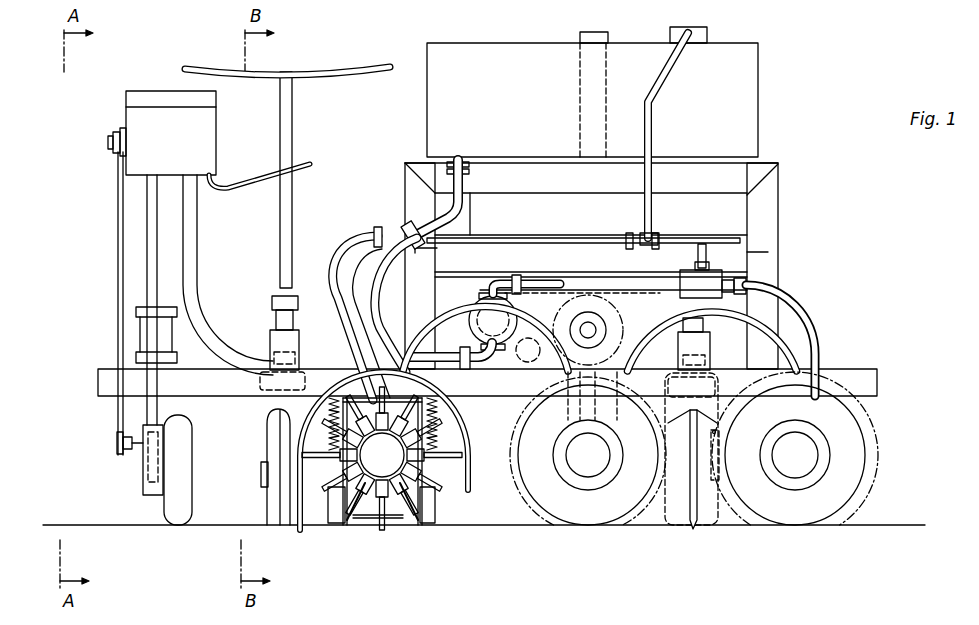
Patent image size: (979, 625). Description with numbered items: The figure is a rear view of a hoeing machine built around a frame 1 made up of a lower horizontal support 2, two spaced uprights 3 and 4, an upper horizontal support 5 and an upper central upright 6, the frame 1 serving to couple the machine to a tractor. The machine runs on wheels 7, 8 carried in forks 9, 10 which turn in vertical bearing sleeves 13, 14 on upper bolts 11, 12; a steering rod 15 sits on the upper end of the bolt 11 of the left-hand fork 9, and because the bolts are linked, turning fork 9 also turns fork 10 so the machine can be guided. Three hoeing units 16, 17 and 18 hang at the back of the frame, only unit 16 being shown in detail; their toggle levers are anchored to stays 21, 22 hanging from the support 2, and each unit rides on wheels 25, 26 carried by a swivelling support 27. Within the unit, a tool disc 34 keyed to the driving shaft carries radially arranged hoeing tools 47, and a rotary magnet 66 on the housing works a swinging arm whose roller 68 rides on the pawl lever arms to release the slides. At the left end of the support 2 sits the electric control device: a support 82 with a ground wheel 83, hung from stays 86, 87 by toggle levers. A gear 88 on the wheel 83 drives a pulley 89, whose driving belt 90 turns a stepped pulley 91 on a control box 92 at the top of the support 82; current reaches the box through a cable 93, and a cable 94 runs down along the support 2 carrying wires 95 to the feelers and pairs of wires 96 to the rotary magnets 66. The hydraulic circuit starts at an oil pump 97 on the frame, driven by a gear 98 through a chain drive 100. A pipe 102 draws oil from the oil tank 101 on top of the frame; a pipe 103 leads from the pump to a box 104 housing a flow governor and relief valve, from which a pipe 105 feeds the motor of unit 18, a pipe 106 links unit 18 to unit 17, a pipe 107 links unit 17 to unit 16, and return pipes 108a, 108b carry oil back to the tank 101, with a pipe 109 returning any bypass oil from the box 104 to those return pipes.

The frame 1 is at (778, 238).
The lower horizontal support 2 is at (872, 385).
The upright 3 is at (773, 212).
The upright 4 is at (415, 203).
The upper horizontal support 5 is at (568, 183).
The upper central upright 6 is at (580, 38).
The wheel 7 is at (284, 512).
The wheel 8 is at (700, 520).
The fork 9 is at (261, 482).
The fork 10 is at (717, 480).
The upper bolt 11 is at (278, 318).
The upper bolt 12 is at (695, 323).
The vertical bearing sleeve 13 is at (275, 340).
The vertical bearing sleeve 14 is at (695, 340).
The steering rod 15 is at (278, 236).
The hoeing unit 16 is at (420, 500).
The hoeing unit 17 is at (622, 505).
The hoeing unit 18 is at (835, 500).
The stay 21 is at (344, 406).
The stay 22 is at (462, 455).
The wheel 25 is at (338, 523).
The wheel 26 is at (428, 523).
The support 27 is at (366, 505).
The tool disc 34 is at (348, 490).
The hoeing tool 47 is at (442, 488).
The rotary magnet 66 is at (395, 405).
The roller 68 is at (436, 425).
The support 82 is at (150, 275).
The wheel 83 is at (178, 515).
The stay 86 is at (137, 328).
The stay 87 is at (165, 342).
The gear 88 is at (153, 485).
The pulley 89 is at (117, 442).
The driving belt 90 is at (117, 203).
The stepped pulley 91 is at (108, 143).
The control box 92 is at (125, 118).
The cable 93 is at (236, 186).
The cable 94 is at (183, 236).
The wires 95 is at (397, 507).
The pairs of wires 96 is at (331, 410).
The oil pump 97 is at (482, 298).
The gear 98 is at (590, 302).
The chain drive 100 is at (550, 300).
The oil tank 101 is at (497, 56).
The pipe 102 is at (372, 268).
The pipe 103 is at (628, 250).
The box 104 is at (688, 280).
The pipe 105 is at (812, 362).
The pipe 106 is at (760, 345).
The pipe 107 is at (443, 330).
The return pipe 108a is at (360, 236).
The return pipe 108b is at (662, 75).
The pipe 109 is at (702, 242).